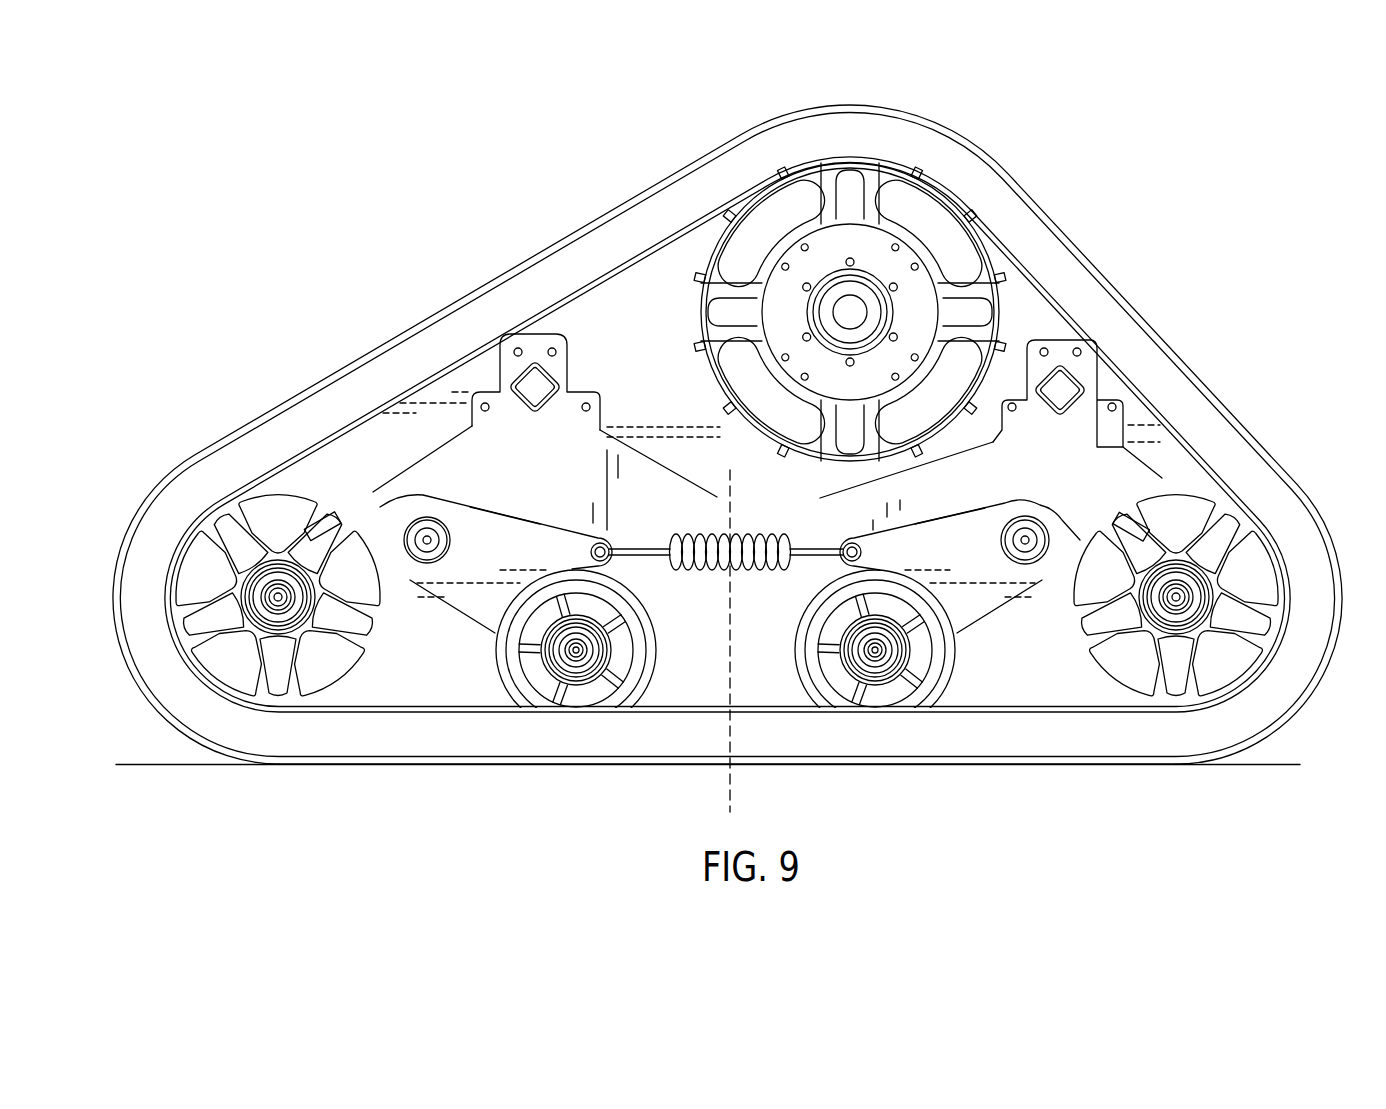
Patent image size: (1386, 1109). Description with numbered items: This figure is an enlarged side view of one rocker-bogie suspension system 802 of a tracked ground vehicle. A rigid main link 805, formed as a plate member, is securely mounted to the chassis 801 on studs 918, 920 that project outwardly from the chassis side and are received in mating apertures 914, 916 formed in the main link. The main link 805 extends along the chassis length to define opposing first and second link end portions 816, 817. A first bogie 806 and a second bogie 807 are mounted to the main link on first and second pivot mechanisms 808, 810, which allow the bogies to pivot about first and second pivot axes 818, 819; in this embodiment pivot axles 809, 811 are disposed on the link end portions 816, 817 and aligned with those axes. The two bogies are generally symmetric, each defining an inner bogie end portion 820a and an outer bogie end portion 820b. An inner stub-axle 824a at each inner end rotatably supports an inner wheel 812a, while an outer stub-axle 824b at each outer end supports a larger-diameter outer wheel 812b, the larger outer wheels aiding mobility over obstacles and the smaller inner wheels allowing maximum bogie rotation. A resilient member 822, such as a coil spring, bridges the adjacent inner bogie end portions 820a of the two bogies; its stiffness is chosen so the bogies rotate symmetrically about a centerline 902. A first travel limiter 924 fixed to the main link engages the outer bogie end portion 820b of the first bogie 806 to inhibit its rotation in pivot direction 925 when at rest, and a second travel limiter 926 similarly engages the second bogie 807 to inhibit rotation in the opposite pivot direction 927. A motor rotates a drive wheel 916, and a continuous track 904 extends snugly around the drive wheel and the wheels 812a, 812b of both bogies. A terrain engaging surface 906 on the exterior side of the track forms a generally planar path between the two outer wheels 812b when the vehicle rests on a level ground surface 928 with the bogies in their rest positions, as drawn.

The track system 802 is at (348, 228).
The continuous track 904 is at (372, 352).
The terrain engaging surface 906 is at (988, 768).
The level ground surface 928 is at (1283, 767).
The drive wheel 916 is at (708, 436).
The chassis 801 is at (630, 384).
The mating aperture 914 is at (515, 406).
The stud 918 is at (548, 386).
The stud 920 is at (1072, 390).
The main link 805 is at (552, 507).
The first link end portion 816 is at (374, 490).
The second link end portion 817 is at (1180, 442).
The first bogie 806 is at (524, 560).
The second bogie 807 is at (957, 602).
The first pivot mechanism 808 is at (436, 511).
The second pivot mechanism 810 is at (958, 555).
The first pivot axis 818 is at (432, 540).
The pivot axle 811 is at (1032, 530).
The pivot axle 809 is at (433, 556).
The second pivot axis 819 is at (1022, 563).
The pivot direction 925 is at (510, 546).
The pivot direction 927 is at (948, 533).
The resilient member 822 is at (770, 573).
The inner bogie end portion 820a is at (610, 542).
The outer wheel 812b is at (393, 673).
The inner wheel 812a is at (657, 660).
The outer stub-axle 824b is at (272, 610).
The inner stub-axle 824a is at (565, 664).
The outer bogie end portion 820b is at (318, 612).
The first travel limiter 924 is at (303, 518).
The second travel limiter 926 is at (1133, 550).
The centerline 902 is at (728, 797).